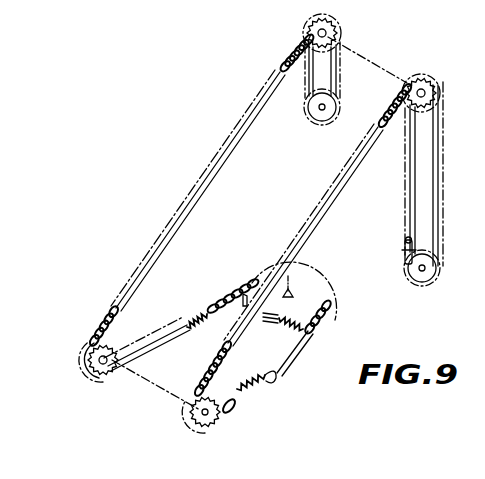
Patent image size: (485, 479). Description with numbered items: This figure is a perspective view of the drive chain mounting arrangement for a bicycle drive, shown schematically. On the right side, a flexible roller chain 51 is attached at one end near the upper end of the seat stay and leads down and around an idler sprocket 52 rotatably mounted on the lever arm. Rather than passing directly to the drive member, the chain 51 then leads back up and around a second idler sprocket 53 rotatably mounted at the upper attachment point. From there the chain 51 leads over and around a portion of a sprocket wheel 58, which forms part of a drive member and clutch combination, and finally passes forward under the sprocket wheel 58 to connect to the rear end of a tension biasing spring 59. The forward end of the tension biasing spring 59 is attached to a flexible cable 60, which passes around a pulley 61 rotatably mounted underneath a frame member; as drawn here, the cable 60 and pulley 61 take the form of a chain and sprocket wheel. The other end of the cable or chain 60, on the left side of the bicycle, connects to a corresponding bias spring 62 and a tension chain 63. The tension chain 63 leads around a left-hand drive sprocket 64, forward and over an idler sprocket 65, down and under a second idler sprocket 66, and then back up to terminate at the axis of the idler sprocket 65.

The flexible roller chain 51 is at (404, 252).
The idler sprocket 52 is at (431, 257).
The second idler sprocket 53 is at (403, 117).
The sprocket wheel 58 is at (221, 418).
The tension biasing spring 59 is at (262, 383).
The flexible cable 60 is at (312, 330).
The pulley 61 is at (315, 304).
The bias spring 62 is at (203, 307).
The tension chain 63 is at (295, 50).
The left-hand drive sprocket 64 is at (107, 372).
The idler sprocket 65 is at (282, 62).
The second idler sprocket 66 is at (310, 122).